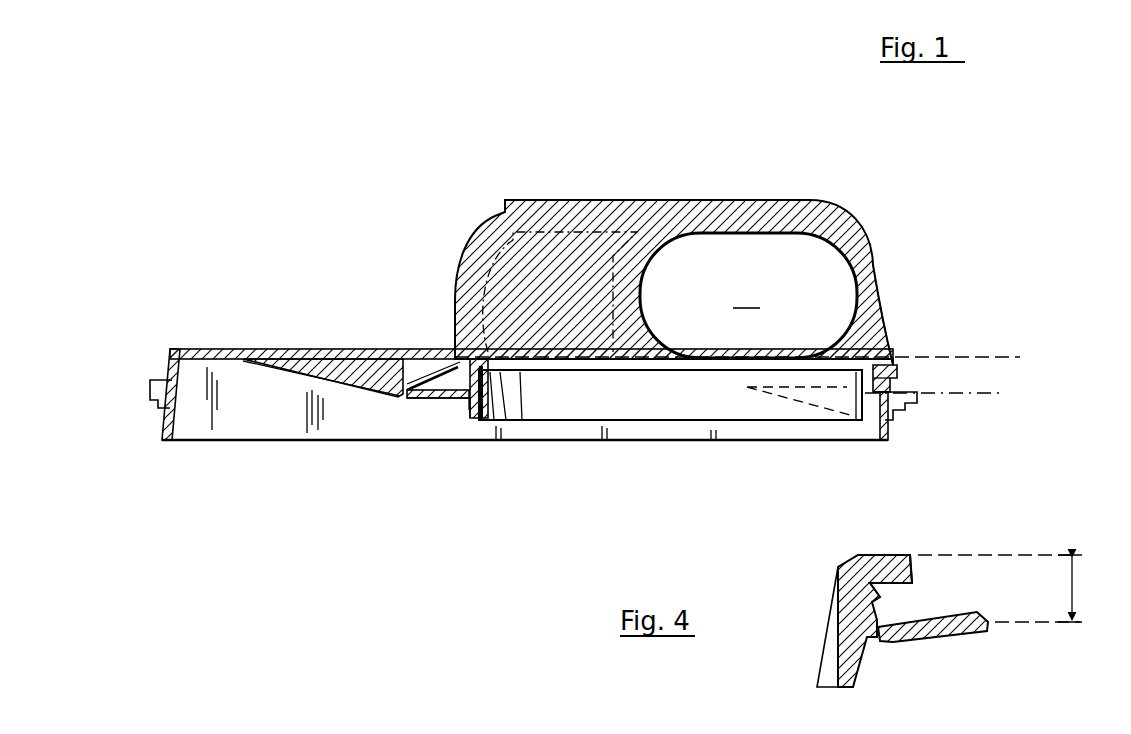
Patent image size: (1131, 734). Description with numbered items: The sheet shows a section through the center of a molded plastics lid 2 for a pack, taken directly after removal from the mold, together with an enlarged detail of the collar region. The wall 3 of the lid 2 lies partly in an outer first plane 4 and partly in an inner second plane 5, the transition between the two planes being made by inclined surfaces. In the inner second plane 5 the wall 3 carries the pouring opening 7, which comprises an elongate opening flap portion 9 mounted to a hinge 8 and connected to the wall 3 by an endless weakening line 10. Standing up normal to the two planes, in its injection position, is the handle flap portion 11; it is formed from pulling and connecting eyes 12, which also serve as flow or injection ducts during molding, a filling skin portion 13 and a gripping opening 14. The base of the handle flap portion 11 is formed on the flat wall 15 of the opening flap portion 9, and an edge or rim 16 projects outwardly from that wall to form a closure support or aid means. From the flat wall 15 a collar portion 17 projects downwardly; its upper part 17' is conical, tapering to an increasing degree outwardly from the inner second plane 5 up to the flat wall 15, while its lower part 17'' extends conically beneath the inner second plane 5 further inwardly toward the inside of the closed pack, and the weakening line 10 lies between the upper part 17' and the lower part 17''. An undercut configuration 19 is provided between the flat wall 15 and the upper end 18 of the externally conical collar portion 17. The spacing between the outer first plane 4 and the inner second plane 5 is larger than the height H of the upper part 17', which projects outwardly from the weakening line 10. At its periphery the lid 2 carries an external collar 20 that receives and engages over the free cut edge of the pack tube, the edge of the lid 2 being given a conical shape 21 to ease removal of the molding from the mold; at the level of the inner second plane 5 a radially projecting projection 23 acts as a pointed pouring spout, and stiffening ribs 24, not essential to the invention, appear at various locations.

In FIG. 1, the lid 2 is at (292, 347).
In FIG. 1, the wall 3 is at (201, 349).
In FIG. 4, the wall 3 is at (947, 630).
In FIG. 1, the outer first plane 4 is at (1020, 357).
In FIG. 1, the inner second plane 5 is at (1003, 393).
In FIG. 4, the inner second plane 5 is at (1025, 626).
In FIG. 1, the pouring opening 7 is at (447, 338).
In FIG. 1, the hinge 8 is at (430, 368).
In FIG. 1, the opening flap portion 9 is at (893, 377).
In FIG. 1, the weakening line 10 is at (470, 404).
In FIG. 4, the weakening line 10 is at (877, 640).
In FIG. 1, the handle flap portion 11 is at (641, 200).
In FIG. 1, the pulling and connecting eyes 12 is at (628, 302).
In FIG. 1, the filling skin portion 13 is at (589, 315).
In FIG. 1, the gripping opening 14 is at (742, 233).
In FIG. 1, the flat wall 15 is at (892, 267).
In FIG. 4, the edge or rim 16 is at (885, 565).
In FIG. 1, the collar portion 17 is at (634, 438).
In FIG. 4, the collar portion 17 is at (825, 621).
In FIG. 1, the upper part of the collar portion 17' is at (431, 456).
In FIG. 4, the upper part of the collar portion 17' is at (810, 586).
In FIG. 1, the lower part of the collar portion 17'' is at (492, 457).
In FIG. 4, the lower part of the collar portion 17'' is at (793, 668).
In FIG. 4, the upper end of the collar portion 18 is at (873, 585).
In FIG. 1, the undercut configuration 19 is at (873, 380).
In FIG. 4, the undercut configuration 19 is at (878, 587).
In FIG. 1, the collar 20 is at (152, 390).
In FIG. 1, the conical edge of the lid 21 is at (180, 440).
In FIG. 1, the projection 23 is at (913, 403).
In FIG. 1, the stiffening ribs 24 is at (320, 368).